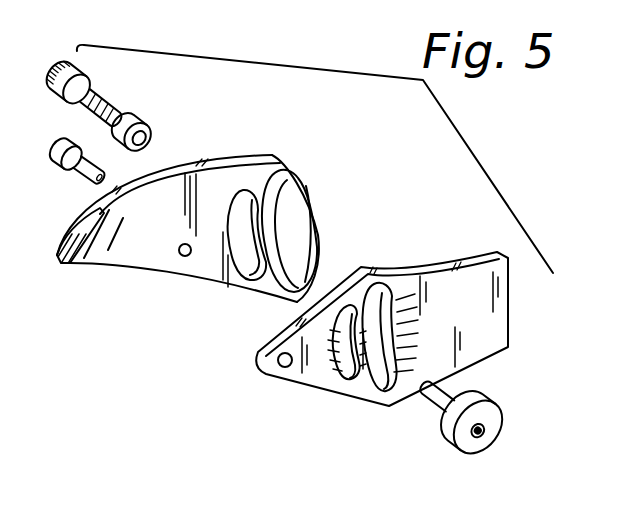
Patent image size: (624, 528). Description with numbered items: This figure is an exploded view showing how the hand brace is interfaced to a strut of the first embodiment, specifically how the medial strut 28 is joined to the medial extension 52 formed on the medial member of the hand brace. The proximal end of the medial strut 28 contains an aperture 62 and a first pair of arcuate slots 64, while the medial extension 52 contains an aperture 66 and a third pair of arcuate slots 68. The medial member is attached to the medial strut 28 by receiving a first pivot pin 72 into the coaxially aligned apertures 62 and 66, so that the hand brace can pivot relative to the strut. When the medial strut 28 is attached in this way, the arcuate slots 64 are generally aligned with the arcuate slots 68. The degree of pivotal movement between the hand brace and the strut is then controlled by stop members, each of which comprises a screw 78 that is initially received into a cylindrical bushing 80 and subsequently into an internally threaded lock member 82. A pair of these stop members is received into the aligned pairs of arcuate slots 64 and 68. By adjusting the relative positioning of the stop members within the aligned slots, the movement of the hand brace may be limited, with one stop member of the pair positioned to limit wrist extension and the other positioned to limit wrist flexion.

The medial strut 28 is at (409, 351).
The medial extension 52 is at (201, 212).
The aperture 62 is at (280, 369).
The first pair of arcuate slots 64 is at (388, 388).
The aperture 66 is at (183, 258).
The third pair of arcuate slots 68 is at (248, 223).
The first pivot pin 72 is at (74, 176).
The screw 78 is at (104, 94).
The cylindrical bushing 80 is at (150, 122).
The internally threaded lock member 82 is at (446, 425).